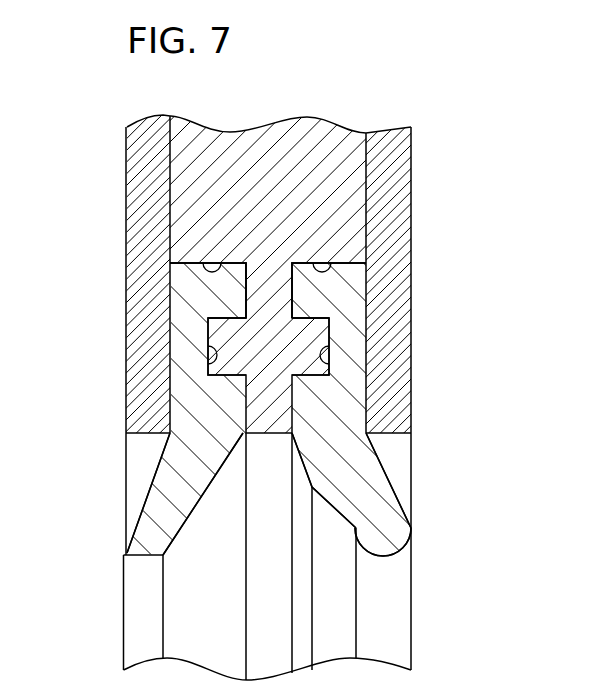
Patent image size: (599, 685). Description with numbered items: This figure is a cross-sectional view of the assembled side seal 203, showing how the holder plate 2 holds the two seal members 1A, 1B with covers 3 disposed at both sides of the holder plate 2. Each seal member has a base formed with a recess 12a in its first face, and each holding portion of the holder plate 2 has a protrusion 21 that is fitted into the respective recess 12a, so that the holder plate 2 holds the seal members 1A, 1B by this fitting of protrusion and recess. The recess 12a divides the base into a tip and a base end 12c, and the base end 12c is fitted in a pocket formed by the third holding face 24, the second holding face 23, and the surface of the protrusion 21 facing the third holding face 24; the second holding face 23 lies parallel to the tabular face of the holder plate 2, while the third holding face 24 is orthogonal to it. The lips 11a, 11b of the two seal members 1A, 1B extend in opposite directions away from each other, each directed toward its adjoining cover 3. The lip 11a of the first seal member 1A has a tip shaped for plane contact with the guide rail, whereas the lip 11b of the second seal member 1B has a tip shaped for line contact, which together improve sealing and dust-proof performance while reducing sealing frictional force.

The holder plate 2 is at (312, 114).
The connector 203 is at (452, 138).
The cover 3 is at (405, 205).
The third holding face 24 is at (210, 267).
The base end 12c is at (205, 280).
The second holding face 23 is at (246, 305).
The protrusion 21 is at (220, 334).
The recess 12a is at (209, 345).
The first seal member 1A is at (150, 455).
The second seal member 1B is at (395, 467).
The lip 11a is at (160, 510).
The lip 11b is at (370, 496).